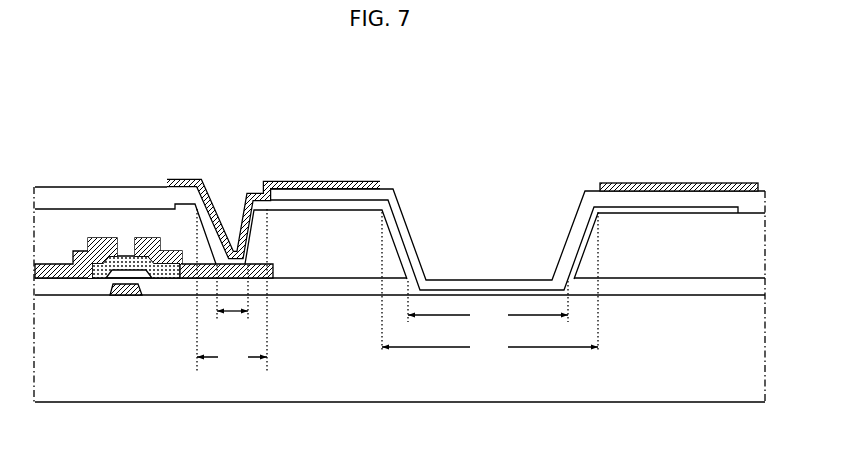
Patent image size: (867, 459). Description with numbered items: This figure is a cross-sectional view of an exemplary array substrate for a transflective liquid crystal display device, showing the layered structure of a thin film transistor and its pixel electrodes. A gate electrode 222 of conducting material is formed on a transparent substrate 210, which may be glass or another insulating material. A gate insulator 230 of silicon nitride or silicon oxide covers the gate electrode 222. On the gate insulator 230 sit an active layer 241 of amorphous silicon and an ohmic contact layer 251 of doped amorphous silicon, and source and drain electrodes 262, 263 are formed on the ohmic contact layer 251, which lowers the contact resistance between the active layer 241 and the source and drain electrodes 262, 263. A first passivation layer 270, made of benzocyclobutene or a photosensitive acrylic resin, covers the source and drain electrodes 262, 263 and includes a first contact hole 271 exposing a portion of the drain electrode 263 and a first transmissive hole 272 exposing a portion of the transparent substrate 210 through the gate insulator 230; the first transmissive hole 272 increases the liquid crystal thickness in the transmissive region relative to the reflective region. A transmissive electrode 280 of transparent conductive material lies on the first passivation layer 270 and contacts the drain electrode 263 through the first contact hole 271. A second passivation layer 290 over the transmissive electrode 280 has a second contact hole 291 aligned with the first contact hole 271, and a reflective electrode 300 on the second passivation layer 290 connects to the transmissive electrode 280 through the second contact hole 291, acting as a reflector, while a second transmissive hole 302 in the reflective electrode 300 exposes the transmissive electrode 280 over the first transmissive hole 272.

The transparent substrate 210 is at (341, 392).
The gate electrode 222 is at (118, 295).
The gate insulator 230 is at (167, 285).
The active layer 241 is at (129, 256).
The ohmic contact layer 251 is at (84, 246).
The source electrode 262 is at (101, 238).
The drain electrode 263 is at (156, 245).
The first passivation layer 270 is at (52, 227).
The first contact hole 271 is at (233, 304).
The first transmissive hole 272 is at (488, 303).
The transmissive electrode 280 is at (334, 207).
The second passivation layer 290 is at (107, 193).
The second contact hole 291 is at (232, 290).
The reflective electrode 300 is at (377, 182).
The second transmissive hole 302 is at (490, 285).